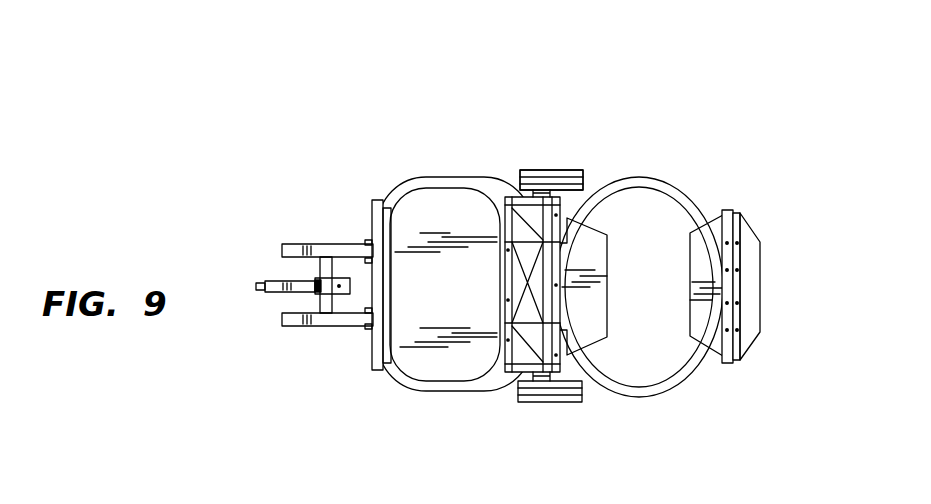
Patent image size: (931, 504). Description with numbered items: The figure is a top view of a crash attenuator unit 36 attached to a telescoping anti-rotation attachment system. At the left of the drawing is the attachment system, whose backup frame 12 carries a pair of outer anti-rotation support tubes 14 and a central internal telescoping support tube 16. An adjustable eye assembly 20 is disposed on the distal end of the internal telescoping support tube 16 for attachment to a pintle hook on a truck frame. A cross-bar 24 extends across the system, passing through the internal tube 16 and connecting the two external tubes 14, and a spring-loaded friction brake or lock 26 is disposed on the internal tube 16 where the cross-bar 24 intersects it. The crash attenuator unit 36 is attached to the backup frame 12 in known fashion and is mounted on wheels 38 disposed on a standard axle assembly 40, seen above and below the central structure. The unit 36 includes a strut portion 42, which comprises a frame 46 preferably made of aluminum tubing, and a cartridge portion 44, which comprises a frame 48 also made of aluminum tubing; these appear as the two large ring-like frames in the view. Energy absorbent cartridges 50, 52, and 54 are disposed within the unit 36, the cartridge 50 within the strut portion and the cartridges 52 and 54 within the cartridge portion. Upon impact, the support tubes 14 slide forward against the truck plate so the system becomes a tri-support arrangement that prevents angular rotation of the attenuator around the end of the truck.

The backup frame 12 is at (371, 194).
The external anti-rotation support tubes 14 is at (293, 243).
The internal telescoping support tube 16 is at (277, 293).
The adjustable eye assembly 20 is at (257, 285).
The cross-bar 24 is at (334, 262).
The spring-loaded friction brake or lock 26 is at (324, 295).
The crash attenuator unit 36 is at (588, 158).
The wheels 38 is at (533, 170).
The axle assembly 40 is at (537, 230).
The strut portion 42 is at (483, 400).
The cartridge portion 44 is at (696, 184).
The frame 46 is at (430, 392).
The frame 48 is at (698, 383).
The energy absorbent cartridge 50 is at (423, 227).
The energy absorbent cartridge 52 is at (593, 283).
The energy absorbent cartridge 54 is at (713, 297).